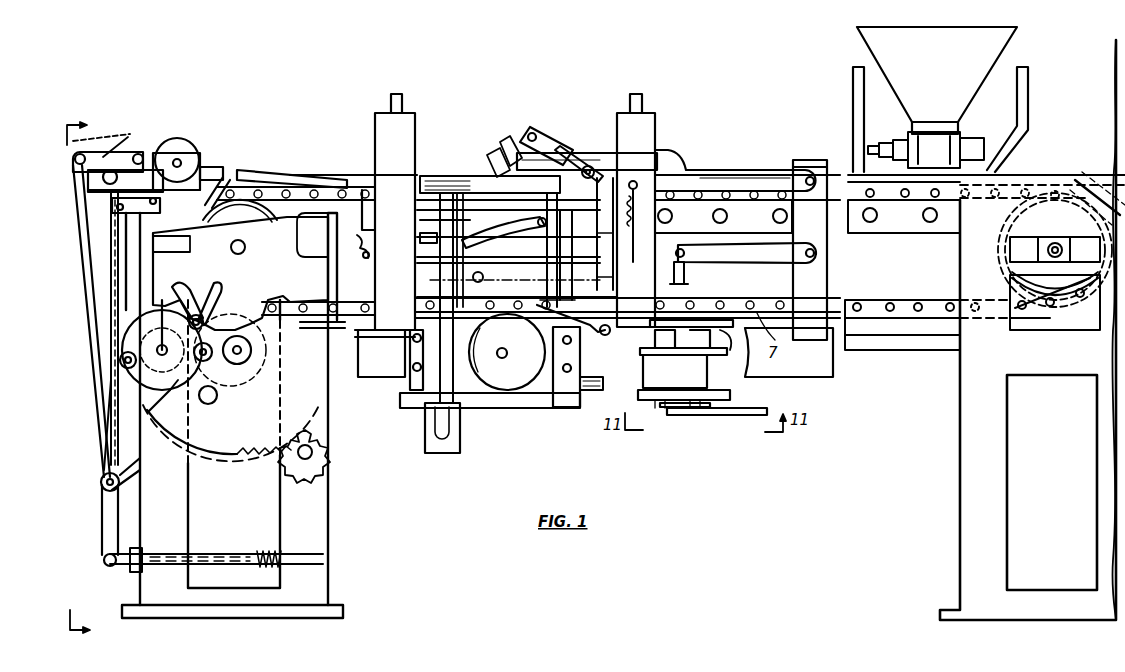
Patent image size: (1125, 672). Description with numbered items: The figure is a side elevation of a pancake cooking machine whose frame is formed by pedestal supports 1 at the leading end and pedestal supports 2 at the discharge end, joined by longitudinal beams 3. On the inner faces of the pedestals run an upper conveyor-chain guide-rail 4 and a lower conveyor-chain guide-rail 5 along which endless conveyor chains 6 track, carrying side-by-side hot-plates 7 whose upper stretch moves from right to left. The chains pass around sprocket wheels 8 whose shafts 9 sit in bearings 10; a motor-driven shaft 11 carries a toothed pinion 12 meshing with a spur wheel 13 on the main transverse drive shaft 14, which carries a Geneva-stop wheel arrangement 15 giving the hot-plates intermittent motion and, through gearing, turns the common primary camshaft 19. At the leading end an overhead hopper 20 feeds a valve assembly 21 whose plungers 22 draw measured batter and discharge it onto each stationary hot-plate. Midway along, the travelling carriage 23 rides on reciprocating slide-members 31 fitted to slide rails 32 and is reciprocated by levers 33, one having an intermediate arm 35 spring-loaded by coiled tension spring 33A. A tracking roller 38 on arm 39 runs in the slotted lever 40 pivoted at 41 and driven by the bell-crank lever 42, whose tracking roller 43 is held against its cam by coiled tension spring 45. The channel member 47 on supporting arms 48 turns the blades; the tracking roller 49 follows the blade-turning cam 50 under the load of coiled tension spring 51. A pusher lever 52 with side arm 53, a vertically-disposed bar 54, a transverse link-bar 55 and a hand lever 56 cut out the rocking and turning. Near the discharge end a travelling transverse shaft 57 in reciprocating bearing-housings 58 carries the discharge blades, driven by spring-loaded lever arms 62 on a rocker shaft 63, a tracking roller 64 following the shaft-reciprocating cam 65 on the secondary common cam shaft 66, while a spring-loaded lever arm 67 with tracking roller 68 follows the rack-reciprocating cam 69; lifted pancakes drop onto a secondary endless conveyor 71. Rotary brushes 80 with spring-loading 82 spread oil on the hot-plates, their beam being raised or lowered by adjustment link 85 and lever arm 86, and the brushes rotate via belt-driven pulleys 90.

The pedestal supports 1 is at (975, 448).
The pedestal supports 2 is at (318, 510).
The longitudinal beams 3 is at (948, 355).
The upper conveyor-chain guide-rail 4 is at (905, 225).
The lower conveyor-chain guide-rail 5 is at (869, 350).
The endless conveyor chains 6 is at (945, 233).
The hot-plates 7 is at (1092, 180).
The sprocket wheels 8 is at (1005, 258).
The shafts 9 is at (1060, 244).
The bearings 10 is at (1048, 240).
The shaft 11 is at (322, 448).
The toothed pinion 12 is at (345, 464).
The spur wheel 13 is at (255, 455).
The main transverse drive shaft 14 is at (248, 366).
The Geneva-stop wheel arrangement 15 is at (288, 352).
The common primary camshaft 19 is at (506, 352).
The overhead hopper 20 is at (940, 99).
The valve assembly 21 is at (946, 150).
The plungers 22 is at (879, 141).
The travelling carriage 23 is at (548, 127).
The reciprocating slide-members 31 is at (560, 230).
The slide rails 32 is at (500, 215).
The levers 33 is at (436, 272).
The coiled tension spring 33A is at (529, 277).
The intermediate arm 35 is at (450, 347).
The tracking roller 38 is at (592, 165).
The arm 39 is at (578, 165).
The slotted lever 40 is at (665, 160).
The pivot 41 is at (808, 172).
The bell-crank lever 42 is at (573, 353).
The tracking roller 43 is at (603, 383).
The coiled tension spring 45 is at (638, 225).
The channel member 47 is at (478, 178).
The supporting arms 48 is at (450, 203).
The tracking roller 49 is at (495, 400).
The blade-turning cam 50 is at (507, 358).
The coiled tension spring 51 is at (515, 277).
The pusher lever 52 is at (427, 243).
The side arm 53 is at (512, 232).
The vertically-disposed bar 54 is at (660, 205).
The transverse link-bar 55 is at (353, 239).
The hand lever 56 is at (243, 176).
The travelling transverse shaft 57 is at (180, 157).
The reciprocating bearing-housings 58 is at (195, 150).
The spring-loaded lever arms 62 is at (88, 285).
The rocker shaft 63 is at (102, 474).
The tracking roller 64 is at (127, 382).
The shaft-reciprocating cam 65 is at (170, 392).
The secondary common cam shaft 66 is at (180, 312).
The spring-loaded lever arm 67 is at (117, 317).
The tracking roller 68 is at (210, 312).
The rack-reciprocating cam 69 is at (125, 329).
The secondary endless conveyor 71 is at (107, 139).
The rotary brushes 80 is at (726, 354).
The spring-loading 82 is at (702, 367).
The adjustment link 85 is at (688, 274).
The lever arm 86 is at (752, 262).
The belt-driven pulleys 90 is at (650, 413).